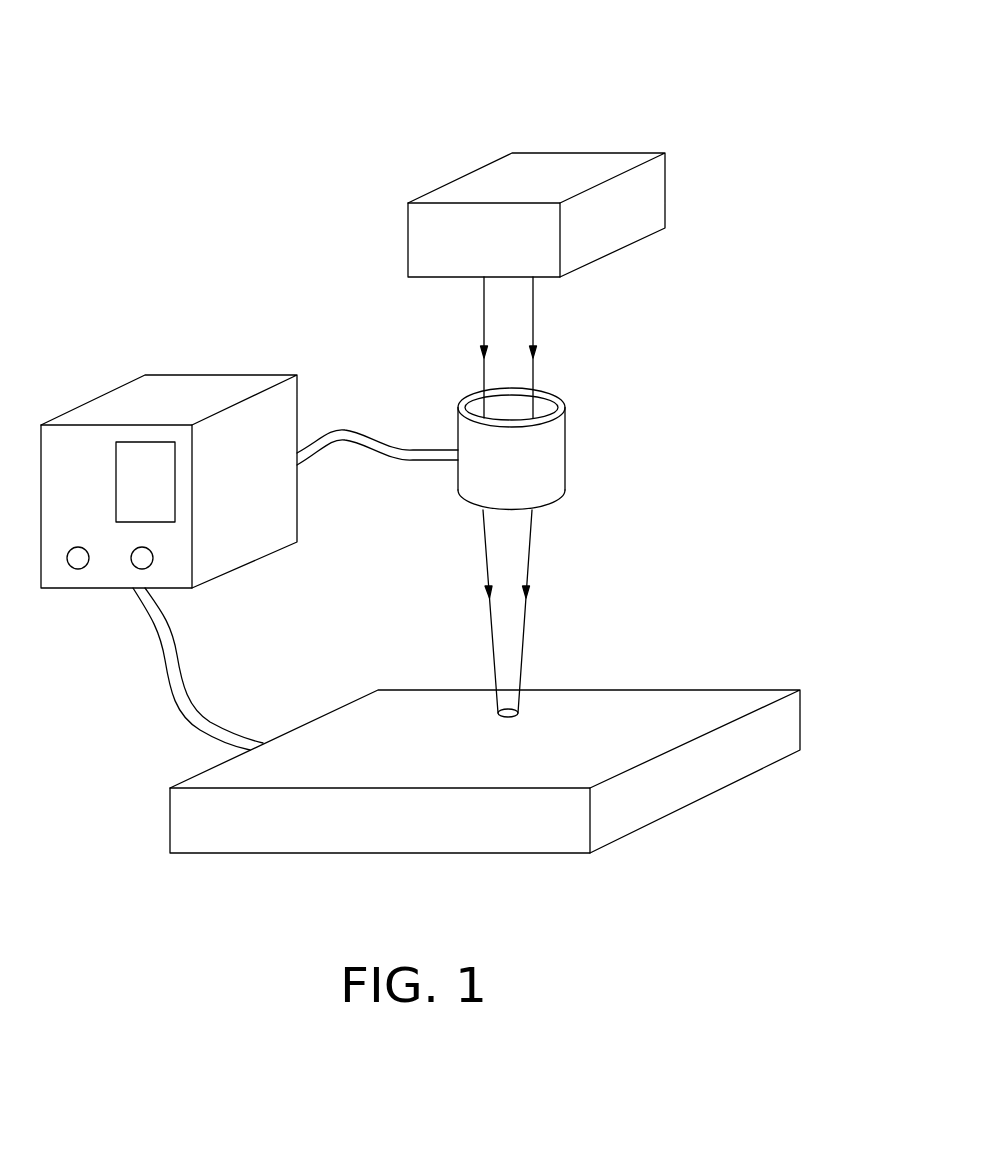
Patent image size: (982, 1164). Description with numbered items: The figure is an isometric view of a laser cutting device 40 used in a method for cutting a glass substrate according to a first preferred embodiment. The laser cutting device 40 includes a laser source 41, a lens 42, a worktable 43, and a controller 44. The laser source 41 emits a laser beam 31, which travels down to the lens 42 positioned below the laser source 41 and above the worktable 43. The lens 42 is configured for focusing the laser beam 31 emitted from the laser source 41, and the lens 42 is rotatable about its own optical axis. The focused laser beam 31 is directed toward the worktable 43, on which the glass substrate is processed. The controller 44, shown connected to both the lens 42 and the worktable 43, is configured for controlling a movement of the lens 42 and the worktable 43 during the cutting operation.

The laser cutting device 40 is at (708, 55).
The laser source 41 is at (573, 158).
The laser beam 31 is at (535, 332).
The lens 42 is at (543, 460).
The worktable 43 is at (652, 705).
The controller 44 is at (173, 392).